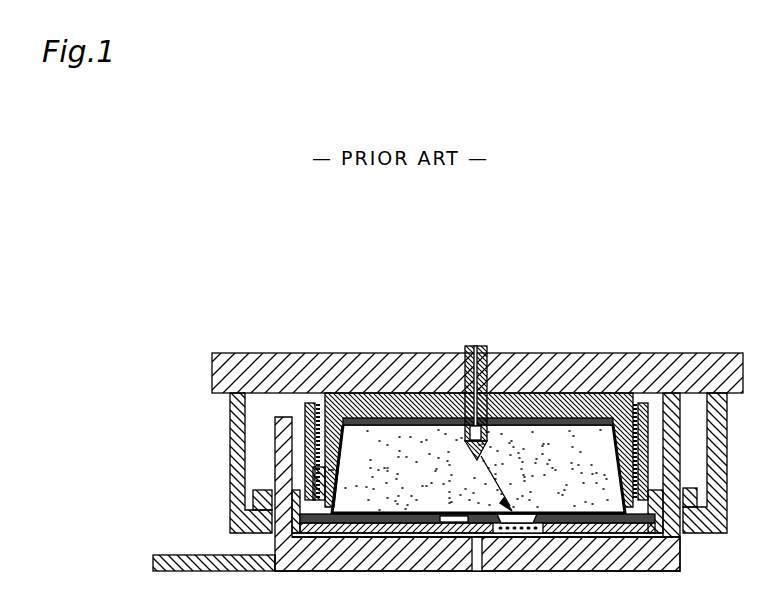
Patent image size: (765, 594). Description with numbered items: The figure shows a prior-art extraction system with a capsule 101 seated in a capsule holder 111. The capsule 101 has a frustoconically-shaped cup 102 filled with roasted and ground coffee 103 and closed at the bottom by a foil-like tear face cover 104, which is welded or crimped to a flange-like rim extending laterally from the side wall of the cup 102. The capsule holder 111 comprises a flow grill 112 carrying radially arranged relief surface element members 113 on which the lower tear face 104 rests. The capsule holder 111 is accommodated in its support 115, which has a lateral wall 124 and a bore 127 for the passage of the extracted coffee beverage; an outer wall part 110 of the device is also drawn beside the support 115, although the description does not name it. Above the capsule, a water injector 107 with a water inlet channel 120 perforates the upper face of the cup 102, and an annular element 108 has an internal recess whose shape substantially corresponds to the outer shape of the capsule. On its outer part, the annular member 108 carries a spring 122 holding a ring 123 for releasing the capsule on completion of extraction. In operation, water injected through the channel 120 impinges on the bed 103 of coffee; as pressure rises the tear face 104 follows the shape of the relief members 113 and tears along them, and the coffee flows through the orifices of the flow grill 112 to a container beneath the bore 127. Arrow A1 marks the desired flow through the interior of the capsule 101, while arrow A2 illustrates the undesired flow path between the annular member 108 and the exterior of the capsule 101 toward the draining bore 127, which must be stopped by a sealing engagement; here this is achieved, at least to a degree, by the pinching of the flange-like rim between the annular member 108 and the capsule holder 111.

The capsule 101 is at (364, 548).
The frustoconically-shaped cup 102 is at (552, 412).
The roasted and ground coffee 103 is at (448, 478).
The tear face cover 104 is at (408, 514).
The water injector 107 is at (466, 348).
The annular element 108 is at (603, 392).
The outer frame wall 110 is at (704, 533).
The capsule holder 111 is at (672, 490).
The flow grill 112 is at (520, 540).
The relief surface element members 113 is at (453, 518).
The support 115 is at (636, 562).
The water inlet channel 120 is at (465, 440).
The spring 122 is at (308, 418).
The ring 123 is at (344, 456).
The lateral wall 124 is at (668, 412).
The bore 127 is at (477, 566).
The arrow A1 is at (496, 483).
The arrow A2 is at (338, 474).